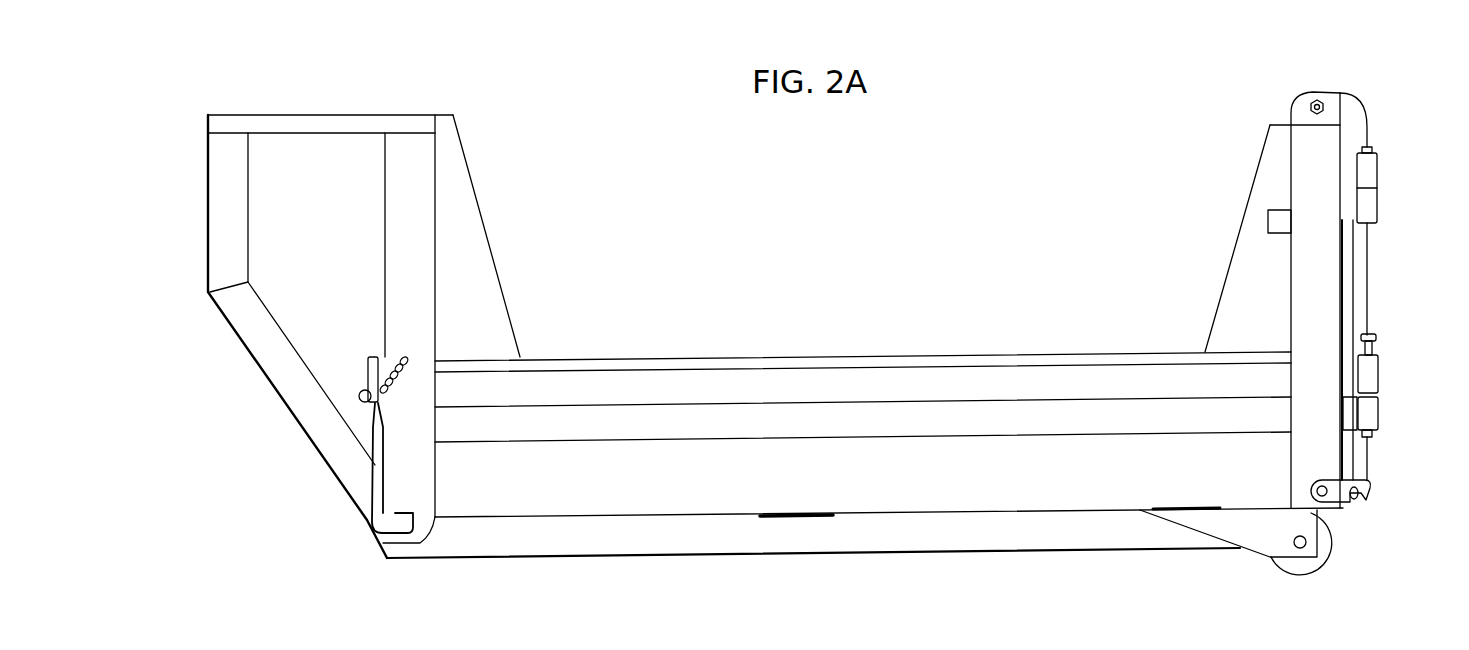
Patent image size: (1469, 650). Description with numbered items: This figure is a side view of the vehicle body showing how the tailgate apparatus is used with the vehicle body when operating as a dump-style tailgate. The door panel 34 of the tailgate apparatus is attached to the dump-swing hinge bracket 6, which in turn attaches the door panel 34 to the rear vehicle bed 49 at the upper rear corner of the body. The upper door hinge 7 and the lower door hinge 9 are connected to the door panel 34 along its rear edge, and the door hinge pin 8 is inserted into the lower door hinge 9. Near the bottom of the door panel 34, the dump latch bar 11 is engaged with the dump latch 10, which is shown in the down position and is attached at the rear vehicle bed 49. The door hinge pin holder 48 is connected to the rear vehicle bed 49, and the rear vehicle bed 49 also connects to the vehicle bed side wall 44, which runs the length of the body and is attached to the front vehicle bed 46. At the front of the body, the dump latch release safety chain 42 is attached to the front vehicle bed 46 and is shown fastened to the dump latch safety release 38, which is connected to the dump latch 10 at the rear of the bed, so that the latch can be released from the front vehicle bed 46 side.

The dump-swing hinge bracket 6 is at (1330, 105).
The upper door hinge 7 is at (1368, 173).
The door hinge pin 8 is at (1376, 340).
The lower door hinge 9 is at (1378, 372).
The dump latch 10 is at (1368, 489).
The dump latch bar 11 is at (1353, 503).
The door panel 34 is at (1353, 288).
The dump latch safety release 38 is at (373, 378).
The dump latch release safety chain 42 is at (393, 355).
The vehicle bed side wall 44 is at (853, 388).
The front vehicle bed 46 is at (222, 229).
The door hinge pin holder 48 is at (1278, 223).
The rear vehicle bed 49 is at (1308, 158).